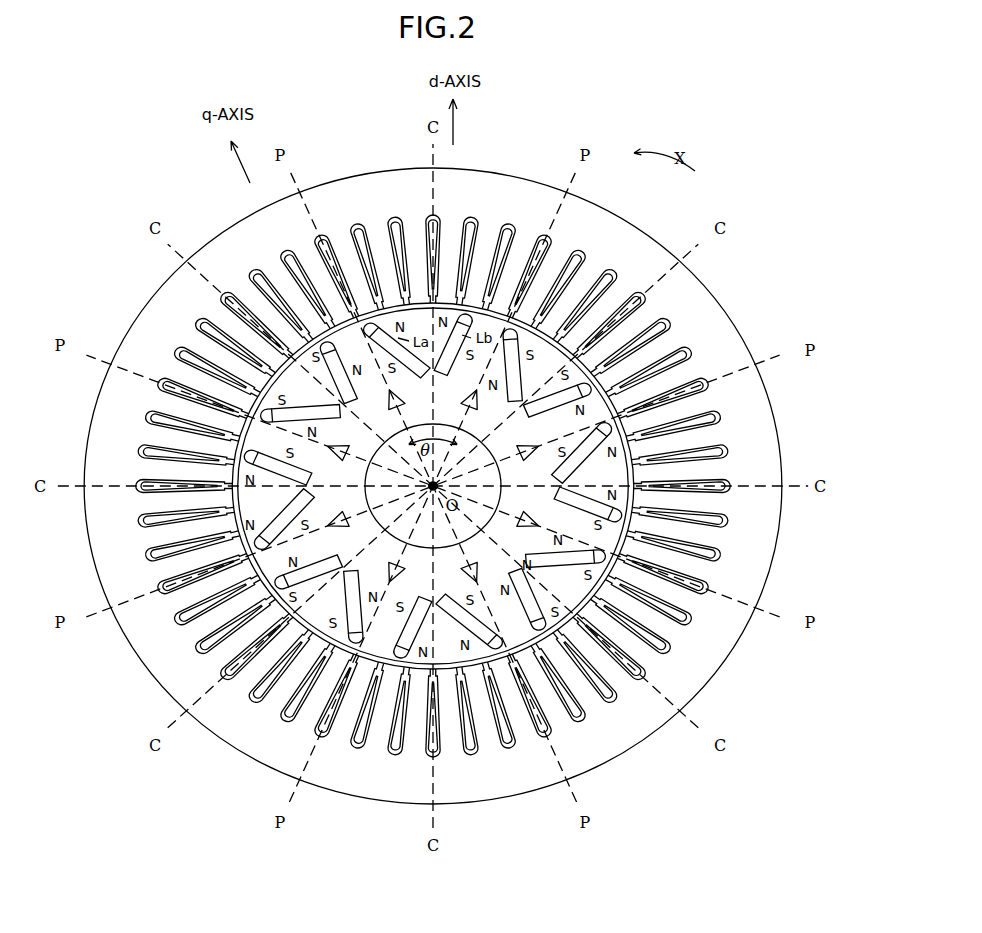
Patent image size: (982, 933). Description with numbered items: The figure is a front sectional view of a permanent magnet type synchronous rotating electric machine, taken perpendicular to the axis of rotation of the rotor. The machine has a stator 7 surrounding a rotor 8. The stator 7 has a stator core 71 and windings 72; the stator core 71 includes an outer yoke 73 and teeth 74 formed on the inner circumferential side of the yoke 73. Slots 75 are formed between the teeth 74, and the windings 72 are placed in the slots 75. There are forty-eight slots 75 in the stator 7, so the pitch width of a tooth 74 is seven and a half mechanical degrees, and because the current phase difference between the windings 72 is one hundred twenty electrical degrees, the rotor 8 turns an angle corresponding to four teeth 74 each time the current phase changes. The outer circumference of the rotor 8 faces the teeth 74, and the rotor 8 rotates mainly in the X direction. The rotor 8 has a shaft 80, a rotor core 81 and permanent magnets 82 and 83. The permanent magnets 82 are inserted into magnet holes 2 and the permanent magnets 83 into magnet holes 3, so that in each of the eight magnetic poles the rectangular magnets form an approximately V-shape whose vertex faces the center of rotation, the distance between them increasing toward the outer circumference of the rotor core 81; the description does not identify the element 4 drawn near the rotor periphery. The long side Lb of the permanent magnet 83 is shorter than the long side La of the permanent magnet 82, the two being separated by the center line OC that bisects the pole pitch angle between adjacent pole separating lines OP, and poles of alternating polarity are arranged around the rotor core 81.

The magnet hole 2 is at (337, 228).
The magnet hole 3 is at (472, 292).
The permanent magnets 4 is at (252, 427).
The stator 7 is at (693, 268).
The rotor 8 is at (262, 383).
The stator core 71 is at (700, 297).
The windings 72 is at (722, 348).
The yoke 73 is at (743, 352).
The teeth 74 is at (675, 335).
The slots 75 is at (690, 357).
The shaft 80 is at (469, 538).
The rotor core 81 is at (305, 323).
The permanent magnet 82 is at (380, 300).
The permanent magnet 83 is at (452, 312).